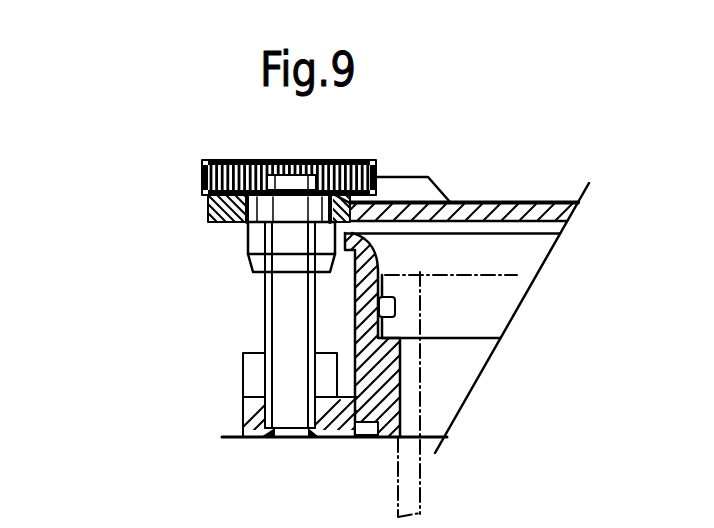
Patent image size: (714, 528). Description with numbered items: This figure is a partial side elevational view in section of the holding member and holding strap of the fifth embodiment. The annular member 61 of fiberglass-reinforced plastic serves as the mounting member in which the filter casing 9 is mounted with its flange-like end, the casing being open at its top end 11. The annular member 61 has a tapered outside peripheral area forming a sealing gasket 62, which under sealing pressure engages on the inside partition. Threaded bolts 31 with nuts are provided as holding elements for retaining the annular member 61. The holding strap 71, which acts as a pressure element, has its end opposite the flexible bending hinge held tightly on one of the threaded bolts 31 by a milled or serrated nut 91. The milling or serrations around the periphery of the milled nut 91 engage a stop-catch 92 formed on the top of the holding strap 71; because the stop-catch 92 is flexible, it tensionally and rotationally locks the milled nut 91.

The filter casing 9 is at (420, 484).
The top end 11 is at (510, 273).
The threaded bolt 31 is at (285, 315).
The annular member 61 is at (342, 430).
The sealing gasket 62 is at (228, 437).
The holding strap 71 is at (495, 212).
The milled nut 91 is at (222, 160).
The stop-catch 92 is at (406, 192).